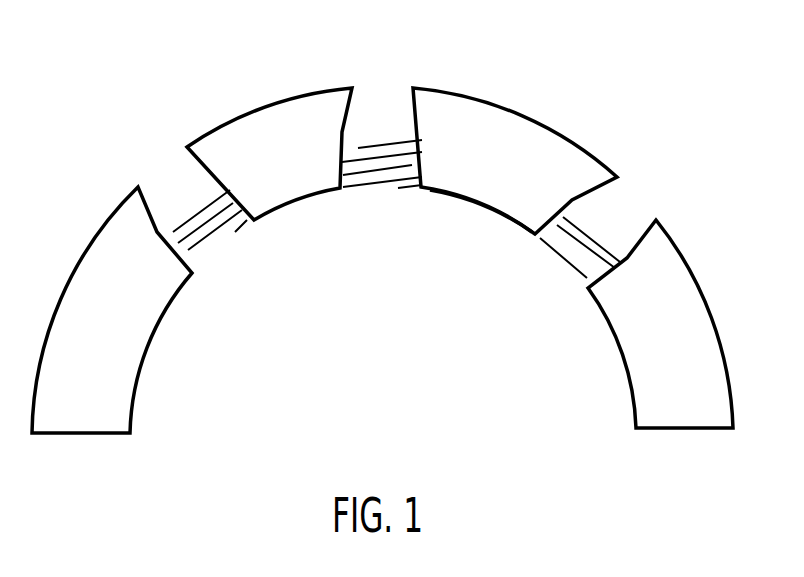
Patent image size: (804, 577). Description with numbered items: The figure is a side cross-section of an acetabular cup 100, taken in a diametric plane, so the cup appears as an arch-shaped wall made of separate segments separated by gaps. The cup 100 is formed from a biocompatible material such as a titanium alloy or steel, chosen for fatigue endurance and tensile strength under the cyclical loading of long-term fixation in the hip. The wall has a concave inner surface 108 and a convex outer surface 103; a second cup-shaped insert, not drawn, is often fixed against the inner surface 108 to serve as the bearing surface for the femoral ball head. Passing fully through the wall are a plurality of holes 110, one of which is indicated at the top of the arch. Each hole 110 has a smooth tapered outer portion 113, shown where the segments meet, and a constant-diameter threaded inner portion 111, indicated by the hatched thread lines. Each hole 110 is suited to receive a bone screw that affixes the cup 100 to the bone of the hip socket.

The acetabular cup 100 is at (248, 63).
The outer surface 103 is at (512, 110).
The inner surface 108 is at (487, 207).
The axially tapered hole 110 is at (383, 72).
The threaded inner portion 111 is at (197, 248).
The smooth tapered outer portion 113 is at (207, 165).